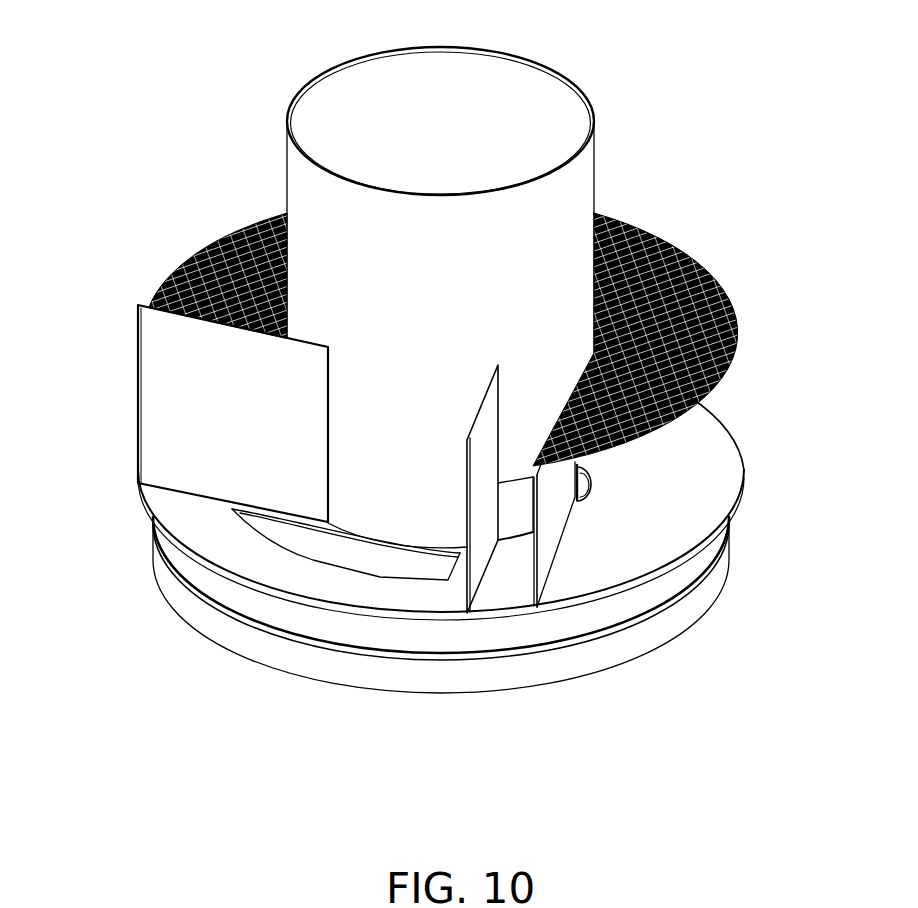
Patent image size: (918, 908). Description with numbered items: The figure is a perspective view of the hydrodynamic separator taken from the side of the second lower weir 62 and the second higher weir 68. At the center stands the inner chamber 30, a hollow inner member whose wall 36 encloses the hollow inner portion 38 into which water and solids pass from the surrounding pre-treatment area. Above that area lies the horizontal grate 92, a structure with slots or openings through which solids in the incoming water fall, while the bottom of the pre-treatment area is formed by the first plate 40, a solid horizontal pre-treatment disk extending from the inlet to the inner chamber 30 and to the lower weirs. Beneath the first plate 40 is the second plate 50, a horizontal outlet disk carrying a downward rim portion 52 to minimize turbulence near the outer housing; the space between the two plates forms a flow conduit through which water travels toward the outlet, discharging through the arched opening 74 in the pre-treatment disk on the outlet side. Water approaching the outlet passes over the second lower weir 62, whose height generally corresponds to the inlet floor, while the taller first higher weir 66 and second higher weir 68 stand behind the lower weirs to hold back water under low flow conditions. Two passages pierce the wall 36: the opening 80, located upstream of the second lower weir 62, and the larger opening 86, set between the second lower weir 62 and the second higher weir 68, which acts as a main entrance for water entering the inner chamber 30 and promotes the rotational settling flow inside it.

The inner chamber 30 is at (448, 275).
The wall 36 is at (360, 240).
The hollow inner portion 38 is at (412, 98).
The first plate 40 is at (705, 463).
The second plate 50 is at (212, 583).
The downward rim portion 52 is at (363, 677).
The second lower weir 62 is at (550, 516).
The first higher weir 66 is at (165, 388).
The second higher weir 68 is at (482, 522).
The opening 74 is at (340, 557).
The opening 80 is at (590, 487).
The opening 86 is at (513, 510).
The horizontal grate 92 is at (727, 288).